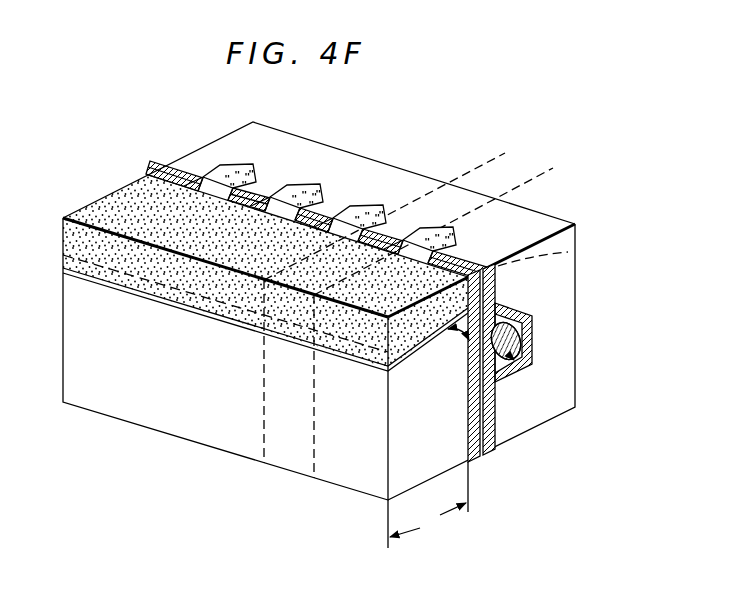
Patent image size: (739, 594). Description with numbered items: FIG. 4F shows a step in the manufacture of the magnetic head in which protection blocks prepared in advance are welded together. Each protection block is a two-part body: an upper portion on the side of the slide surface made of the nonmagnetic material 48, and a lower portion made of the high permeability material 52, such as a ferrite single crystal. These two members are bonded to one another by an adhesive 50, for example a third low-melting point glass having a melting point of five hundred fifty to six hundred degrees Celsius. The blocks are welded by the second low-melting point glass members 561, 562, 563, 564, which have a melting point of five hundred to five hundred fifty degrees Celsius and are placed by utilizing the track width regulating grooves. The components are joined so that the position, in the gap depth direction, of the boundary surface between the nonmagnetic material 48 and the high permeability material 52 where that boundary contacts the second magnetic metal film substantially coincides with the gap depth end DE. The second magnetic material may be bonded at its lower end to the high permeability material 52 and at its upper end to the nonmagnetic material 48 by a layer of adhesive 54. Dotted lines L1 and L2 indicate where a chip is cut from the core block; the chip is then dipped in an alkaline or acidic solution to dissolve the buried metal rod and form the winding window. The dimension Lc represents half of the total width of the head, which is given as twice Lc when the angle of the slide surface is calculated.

The nonmagnetic material 48 is at (80, 243).
The adhesive 50 is at (63, 270).
The high permeability material 52 is at (97, 402).
The layer of adhesive 54 is at (470, 462).
The second low-melting point glass member 561 is at (455, 230).
The second low-melting point glass member 562 is at (375, 208).
The second low-melting point glass member 563 is at (305, 190).
The second low-melting point glass member 564 is at (243, 165).
The gap depth end DE is at (493, 302).
The dotted line L1 is at (263, 405).
The dotted line L2 is at (313, 440).
The half of total head width Lc is at (428, 505).